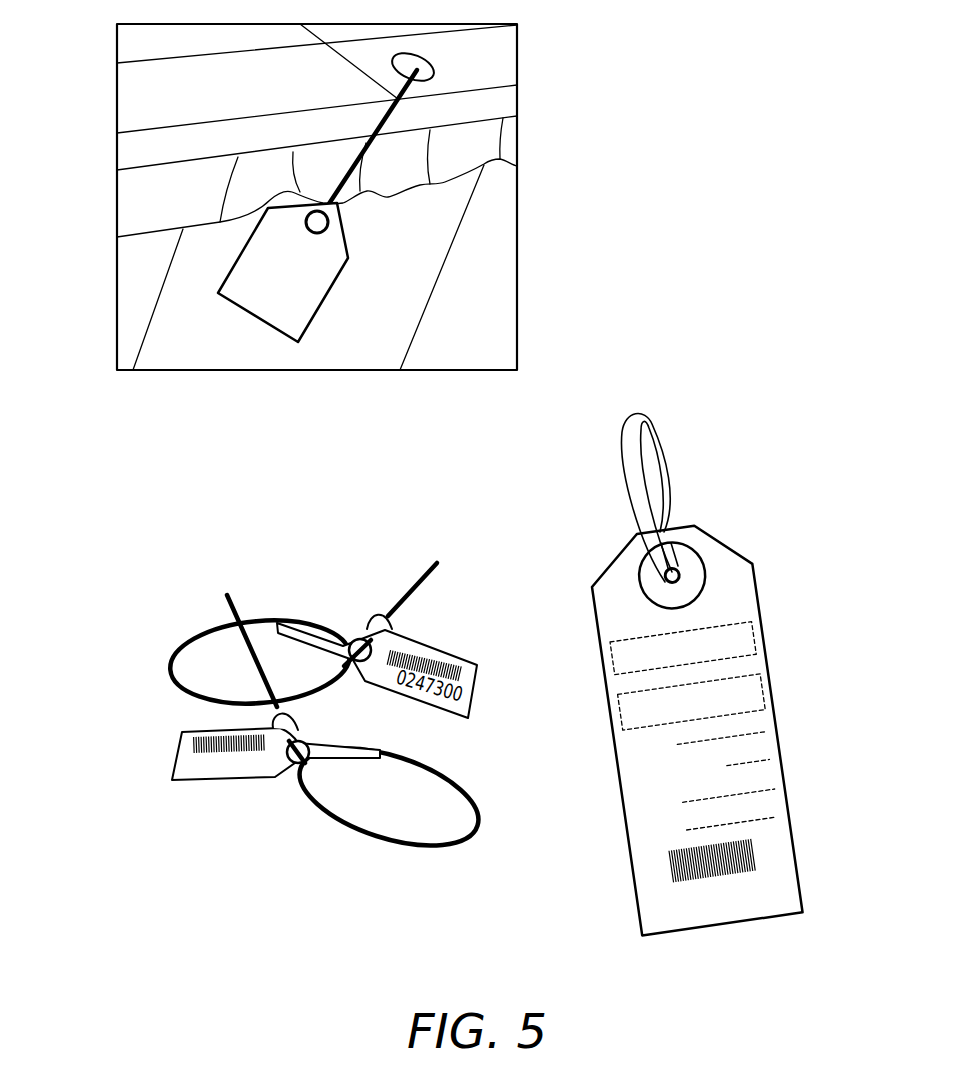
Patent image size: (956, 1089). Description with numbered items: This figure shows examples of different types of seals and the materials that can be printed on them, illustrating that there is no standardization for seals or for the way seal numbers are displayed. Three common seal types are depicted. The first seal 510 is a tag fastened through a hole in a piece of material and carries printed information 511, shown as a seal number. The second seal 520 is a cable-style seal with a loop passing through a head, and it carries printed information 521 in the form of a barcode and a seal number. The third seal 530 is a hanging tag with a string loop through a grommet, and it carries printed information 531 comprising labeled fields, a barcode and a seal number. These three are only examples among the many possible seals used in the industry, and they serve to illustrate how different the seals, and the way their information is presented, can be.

The seal 510 is at (303, 339).
The information 511 is at (279, 300).
The seal 520 is at (264, 751).
The information 521 is at (186, 762).
The seal 530 is at (681, 491).
The information 531 is at (733, 614).